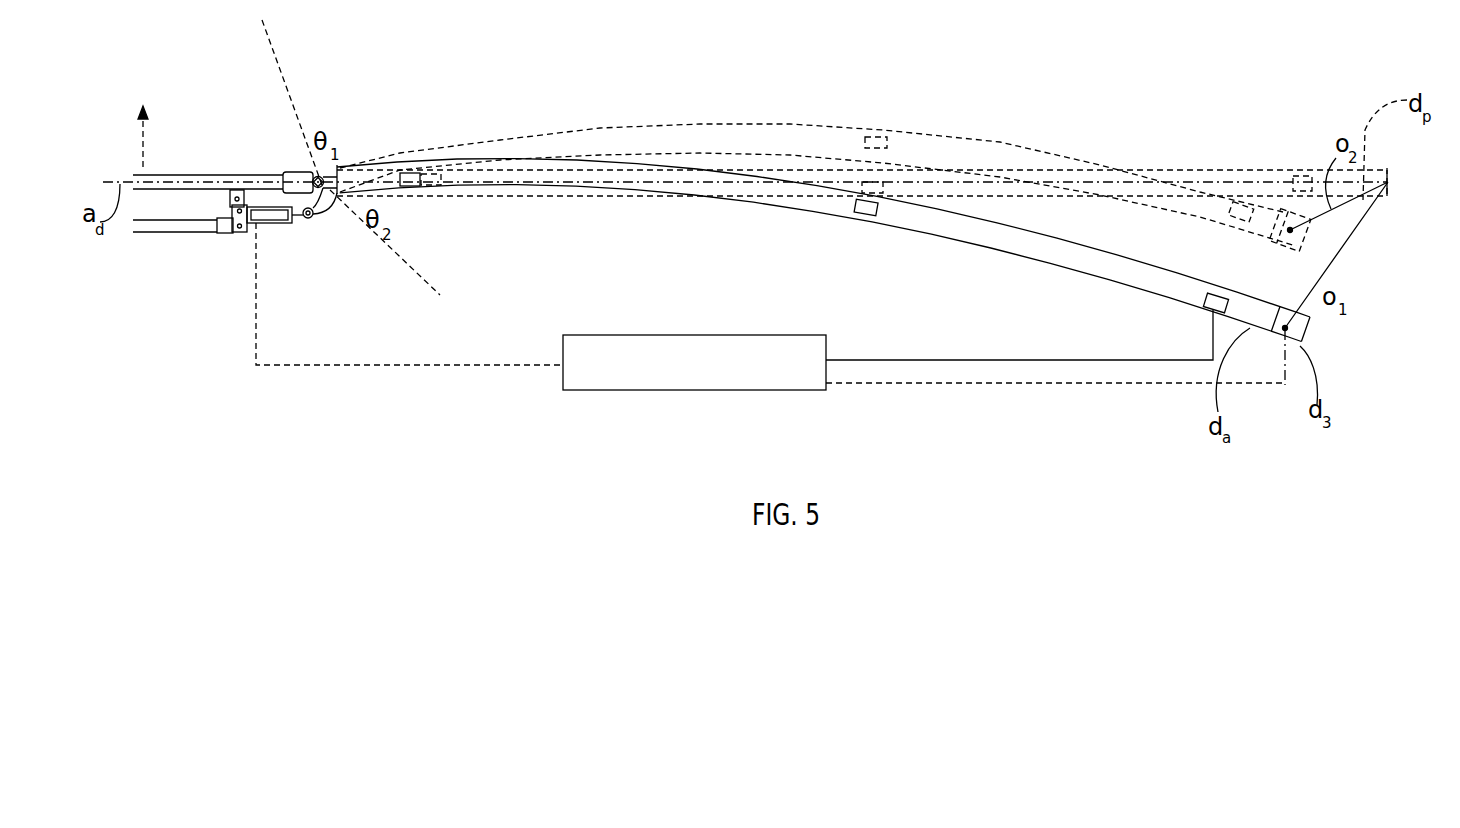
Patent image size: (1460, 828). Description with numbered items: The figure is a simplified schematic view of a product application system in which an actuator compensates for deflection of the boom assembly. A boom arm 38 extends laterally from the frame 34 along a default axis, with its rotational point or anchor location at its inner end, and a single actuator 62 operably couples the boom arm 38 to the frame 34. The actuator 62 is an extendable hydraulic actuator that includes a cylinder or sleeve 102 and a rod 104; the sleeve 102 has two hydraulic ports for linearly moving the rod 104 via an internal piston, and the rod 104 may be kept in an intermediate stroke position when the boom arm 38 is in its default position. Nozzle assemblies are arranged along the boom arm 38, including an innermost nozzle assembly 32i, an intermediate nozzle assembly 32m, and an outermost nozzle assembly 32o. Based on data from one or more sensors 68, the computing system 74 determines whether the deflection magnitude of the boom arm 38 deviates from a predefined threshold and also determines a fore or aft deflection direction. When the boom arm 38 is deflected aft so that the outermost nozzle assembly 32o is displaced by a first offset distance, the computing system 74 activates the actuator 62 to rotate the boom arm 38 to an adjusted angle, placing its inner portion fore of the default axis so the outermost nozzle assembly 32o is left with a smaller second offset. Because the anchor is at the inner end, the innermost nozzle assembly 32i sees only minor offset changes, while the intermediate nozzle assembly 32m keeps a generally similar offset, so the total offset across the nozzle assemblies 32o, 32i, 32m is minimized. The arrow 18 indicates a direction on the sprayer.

The direction of travel arrow 18 is at (148, 122).
The frame 34 is at (208, 176).
The boom arm 38 is at (789, 207).
The actuator 62 is at (263, 224).
The sensors 68 is at (248, 224).
The computing system 74 is at (787, 391).
The cylinder or sleeve 102 is at (276, 224).
The rod 104 is at (296, 222).
The innermost nozzle assembly 32i is at (414, 187).
The intermediate nozzle assembly 32m is at (992, 210).
The outermost nozzle assembly 32o is at (1390, 170).